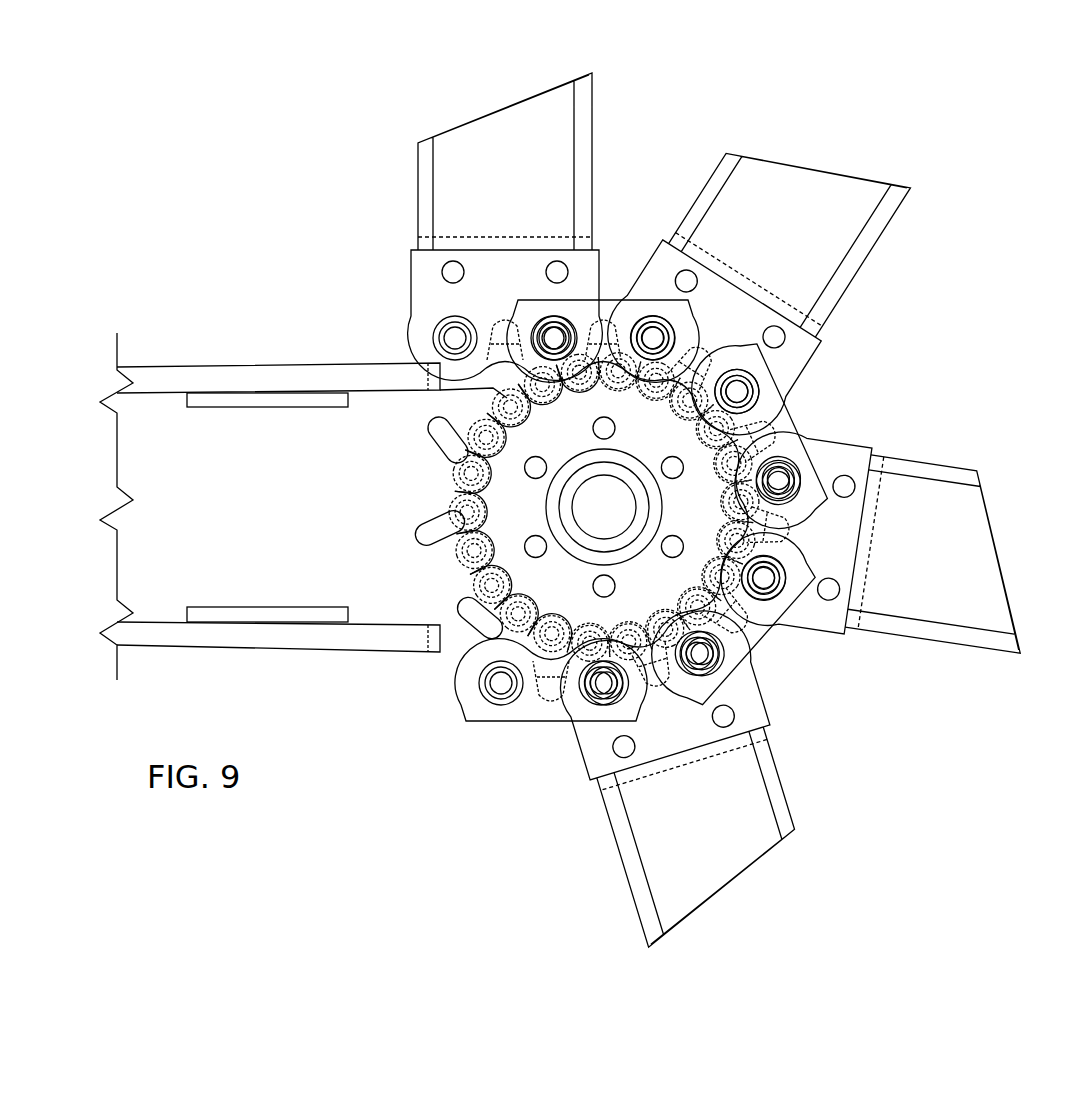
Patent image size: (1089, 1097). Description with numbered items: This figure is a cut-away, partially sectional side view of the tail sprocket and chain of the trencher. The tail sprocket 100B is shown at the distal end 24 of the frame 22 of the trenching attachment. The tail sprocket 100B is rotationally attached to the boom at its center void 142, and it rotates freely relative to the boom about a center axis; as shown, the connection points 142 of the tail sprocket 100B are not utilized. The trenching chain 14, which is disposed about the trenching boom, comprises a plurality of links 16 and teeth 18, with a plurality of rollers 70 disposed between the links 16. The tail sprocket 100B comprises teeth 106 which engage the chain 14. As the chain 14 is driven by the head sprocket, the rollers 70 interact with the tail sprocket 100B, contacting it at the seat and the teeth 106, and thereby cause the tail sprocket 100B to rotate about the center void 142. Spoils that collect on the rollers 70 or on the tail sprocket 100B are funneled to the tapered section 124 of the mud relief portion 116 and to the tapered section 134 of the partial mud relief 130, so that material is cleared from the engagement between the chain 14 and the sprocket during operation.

The trenching chain 14 is at (418, 112).
The links 16 is at (767, 637).
The teeth 18 is at (793, 170).
The frame 22 is at (235, 362).
The distal end 24 is at (605, 505).
The rollers 70 is at (700, 650).
The tail sprocket 100B is at (605, 332).
The teeth 106 is at (760, 437).
The mud relief portion 116 is at (475, 590).
The tapered section 124 is at (497, 700).
The partial mud relief 130 is at (465, 556).
The tapered section 134 is at (440, 440).
The center void 142 is at (560, 555).